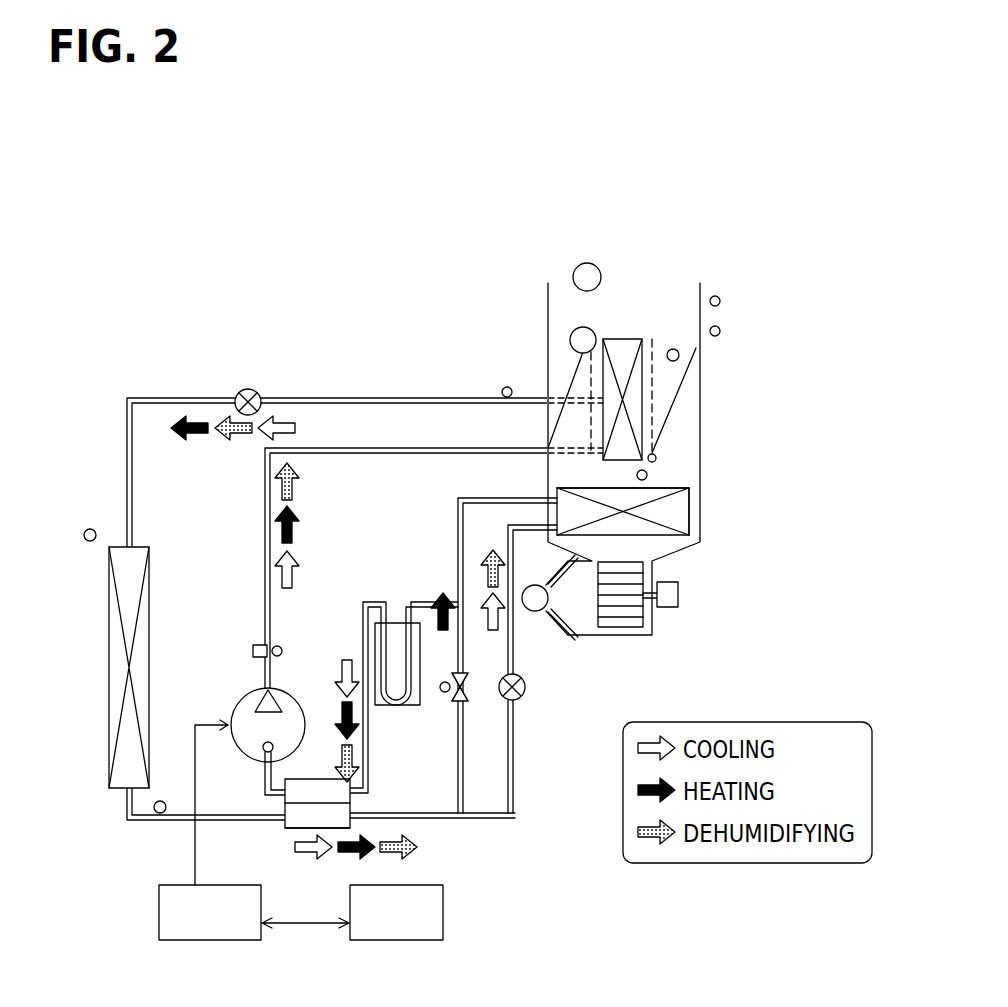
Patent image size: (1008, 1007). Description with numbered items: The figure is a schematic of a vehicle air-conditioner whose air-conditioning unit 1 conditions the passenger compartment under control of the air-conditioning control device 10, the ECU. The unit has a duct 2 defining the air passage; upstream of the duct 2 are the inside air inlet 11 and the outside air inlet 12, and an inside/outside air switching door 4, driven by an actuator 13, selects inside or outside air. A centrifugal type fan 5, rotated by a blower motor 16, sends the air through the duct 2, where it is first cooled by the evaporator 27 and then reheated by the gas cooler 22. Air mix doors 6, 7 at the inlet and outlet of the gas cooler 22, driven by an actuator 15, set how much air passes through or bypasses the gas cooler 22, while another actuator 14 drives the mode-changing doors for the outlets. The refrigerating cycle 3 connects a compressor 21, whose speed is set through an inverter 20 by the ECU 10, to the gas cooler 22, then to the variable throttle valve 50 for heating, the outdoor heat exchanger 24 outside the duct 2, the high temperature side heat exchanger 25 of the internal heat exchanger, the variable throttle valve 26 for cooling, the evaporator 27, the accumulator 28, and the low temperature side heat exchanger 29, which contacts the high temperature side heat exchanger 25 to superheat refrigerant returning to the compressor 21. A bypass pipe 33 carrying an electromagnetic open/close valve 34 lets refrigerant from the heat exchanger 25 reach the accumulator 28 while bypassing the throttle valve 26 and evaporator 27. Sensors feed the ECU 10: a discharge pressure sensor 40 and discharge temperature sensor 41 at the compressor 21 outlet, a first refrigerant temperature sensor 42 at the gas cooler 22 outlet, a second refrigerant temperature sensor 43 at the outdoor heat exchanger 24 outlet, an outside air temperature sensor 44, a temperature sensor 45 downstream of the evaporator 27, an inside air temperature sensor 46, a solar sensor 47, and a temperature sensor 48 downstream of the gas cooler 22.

The air-conditioning unit 1 is at (697, 233).
The duct 2 is at (700, 497).
The refrigerating cycle 3 is at (130, 397).
The inside/outside air switching door 4 is at (570, 617).
The centrifugal type fan 5 is at (628, 623).
The air mix door 6 is at (578, 365).
The air mix door 7 is at (687, 370).
The air-conditioning control device 10 is at (398, 941).
The inside air inlet 11 is at (560, 568).
The outside air inlet 12 is at (545, 613).
The actuator 13 is at (523, 590).
The actuator 14 is at (587, 263).
The actuator 15 is at (583, 327).
The blower motor 16 is at (679, 597).
The inverter 20 is at (210, 941).
The compressor 21 is at (238, 705).
The gas cooler 22 is at (638, 418).
The outdoor heat exchanger 24 is at (150, 585).
The high temperature side heat exchanger 25 is at (288, 830).
The variable throttle valve 26 is at (520, 700).
The evaporator 27 is at (680, 517).
The accumulator 28 is at (396, 706).
The low temperature side heat exchanger 29 is at (318, 780).
The bypass pipe 33 is at (458, 795).
The electromagnetic open/close valve 34 is at (445, 693).
The discharge pressure sensor 40 is at (252, 651).
The discharge temperature sensor 41 is at (283, 651).
The first refrigerant temperature sensor 42 is at (507, 387).
The second refrigerant temperature sensor 43 is at (160, 801).
The outside air temperature sensor 44 is at (90, 529).
The temperature sensor 45 is at (648, 475).
The inside air temperature sensor 46 is at (721, 301).
The solar sensor 47 is at (721, 331).
The temperature sensor 48 is at (673, 349).
The variable throttle valve 50 is at (258, 390).